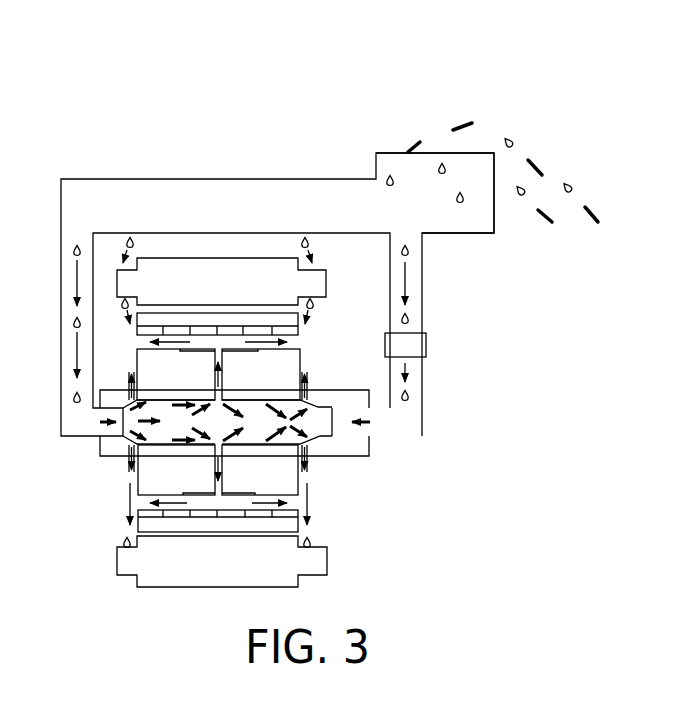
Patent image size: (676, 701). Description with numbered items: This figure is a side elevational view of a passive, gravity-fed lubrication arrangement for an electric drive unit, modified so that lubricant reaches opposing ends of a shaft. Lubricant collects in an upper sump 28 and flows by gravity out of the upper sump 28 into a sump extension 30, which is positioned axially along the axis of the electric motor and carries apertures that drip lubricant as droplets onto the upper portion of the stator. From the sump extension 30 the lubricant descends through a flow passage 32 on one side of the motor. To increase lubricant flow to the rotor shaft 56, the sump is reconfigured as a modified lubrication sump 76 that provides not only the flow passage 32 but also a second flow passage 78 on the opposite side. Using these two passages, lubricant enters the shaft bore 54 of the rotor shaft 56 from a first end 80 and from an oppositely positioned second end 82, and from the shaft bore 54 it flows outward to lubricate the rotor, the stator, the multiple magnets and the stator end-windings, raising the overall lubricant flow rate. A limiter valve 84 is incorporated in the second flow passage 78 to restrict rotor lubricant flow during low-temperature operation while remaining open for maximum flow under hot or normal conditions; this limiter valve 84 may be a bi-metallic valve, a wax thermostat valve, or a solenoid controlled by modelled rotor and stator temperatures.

The upper sump 28 is at (453, 222).
The sump extension 30 is at (222, 191).
The flow passage 32 is at (61, 330).
The shaft bore 54 is at (312, 434).
The rotor shaft 56 is at (318, 390).
The modified lubrication sump 76 is at (390, 80).
The second flow passage 78 is at (413, 282).
The first end 80 is at (100, 446).
The second end 82 is at (360, 447).
The limiter valve 84 is at (428, 345).